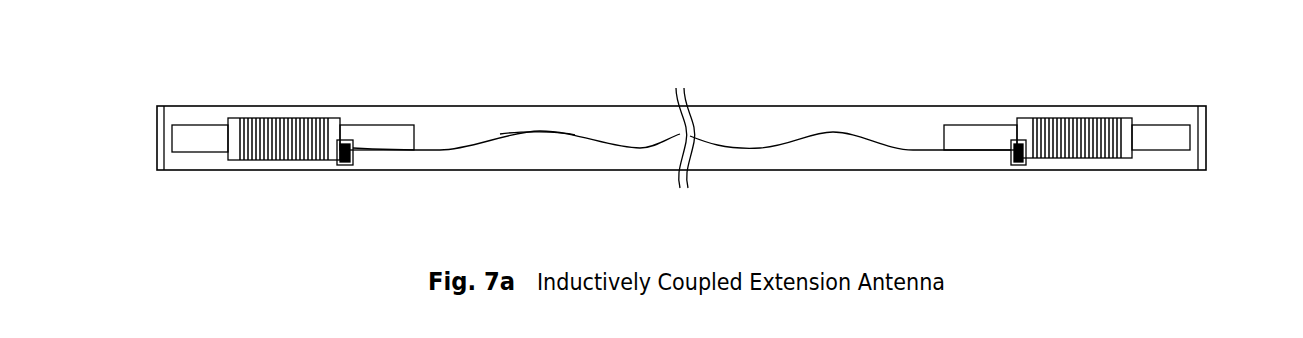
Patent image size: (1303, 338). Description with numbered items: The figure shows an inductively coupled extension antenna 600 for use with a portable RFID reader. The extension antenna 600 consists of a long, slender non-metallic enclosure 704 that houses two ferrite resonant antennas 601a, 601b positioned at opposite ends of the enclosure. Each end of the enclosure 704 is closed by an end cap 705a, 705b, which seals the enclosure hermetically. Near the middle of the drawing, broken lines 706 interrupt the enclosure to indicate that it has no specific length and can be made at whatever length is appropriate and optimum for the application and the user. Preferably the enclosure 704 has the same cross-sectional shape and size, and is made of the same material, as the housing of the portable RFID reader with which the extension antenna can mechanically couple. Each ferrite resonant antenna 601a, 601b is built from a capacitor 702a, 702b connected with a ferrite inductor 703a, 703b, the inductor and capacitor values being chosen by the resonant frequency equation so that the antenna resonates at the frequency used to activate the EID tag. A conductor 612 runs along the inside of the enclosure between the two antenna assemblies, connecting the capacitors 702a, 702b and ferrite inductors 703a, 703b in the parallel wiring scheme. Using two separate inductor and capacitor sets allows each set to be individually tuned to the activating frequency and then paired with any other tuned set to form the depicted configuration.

The extension antenna 600 is at (822, 185).
The ferrite resonant antenna 601a is at (270, 112).
The ferrite resonant antenna 601b is at (1092, 112).
The wire conductor 612 is at (463, 155).
The capacitor 702a is at (347, 148).
The capacitor 702b is at (1013, 146).
The ferrite inductor 703a is at (287, 147).
The ferrite inductor 703b is at (1077, 148).
The non-metallic enclosure 704 is at (732, 107).
The end cap 705a is at (152, 156).
The end cap 705b is at (1213, 148).
The broken lines 706 is at (675, 90).